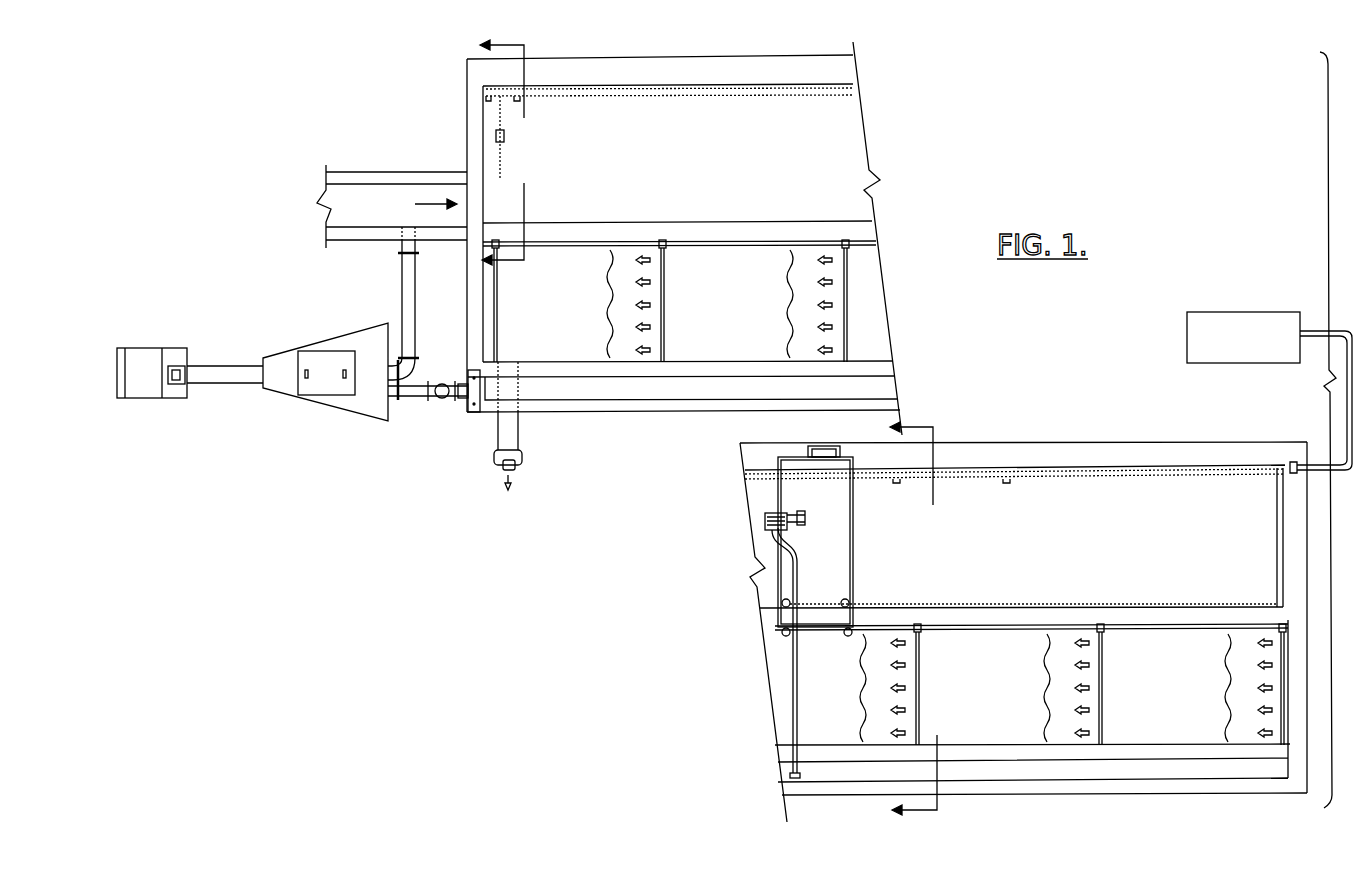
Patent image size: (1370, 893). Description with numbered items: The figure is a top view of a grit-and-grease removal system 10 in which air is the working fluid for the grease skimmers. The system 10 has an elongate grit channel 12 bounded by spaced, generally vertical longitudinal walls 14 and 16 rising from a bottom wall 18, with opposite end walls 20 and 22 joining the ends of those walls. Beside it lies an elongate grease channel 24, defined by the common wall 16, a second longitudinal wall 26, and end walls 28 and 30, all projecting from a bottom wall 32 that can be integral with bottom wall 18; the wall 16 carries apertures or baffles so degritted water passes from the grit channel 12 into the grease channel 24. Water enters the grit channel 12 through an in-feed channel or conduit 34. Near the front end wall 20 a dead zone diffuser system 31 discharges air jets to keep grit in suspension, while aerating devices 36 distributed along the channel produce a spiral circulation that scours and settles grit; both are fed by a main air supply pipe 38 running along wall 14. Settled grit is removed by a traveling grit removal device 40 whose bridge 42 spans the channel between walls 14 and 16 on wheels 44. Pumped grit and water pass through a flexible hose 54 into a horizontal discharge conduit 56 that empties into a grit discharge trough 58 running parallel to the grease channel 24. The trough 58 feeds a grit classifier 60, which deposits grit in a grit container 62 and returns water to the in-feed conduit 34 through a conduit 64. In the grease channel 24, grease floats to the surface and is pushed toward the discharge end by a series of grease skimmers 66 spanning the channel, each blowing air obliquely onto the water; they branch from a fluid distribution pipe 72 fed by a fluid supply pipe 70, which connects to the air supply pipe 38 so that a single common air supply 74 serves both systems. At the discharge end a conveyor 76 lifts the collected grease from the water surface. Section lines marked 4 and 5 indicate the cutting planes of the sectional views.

The section line 4- 4 is at (924, 621).
The section line 5- 5 is at (512, 157).
The grit-and-grease removal system 10 is at (417, 77).
The grit channel 12 is at (634, 118).
The longitudinal wall 14 is at (722, 64).
The longitudinal wall 16 is at (575, 230).
The bottom wall 18 is at (723, 170).
The end wall 20 is at (475, 119).
The end wall 22 is at (1297, 508).
The grease channel 24 is at (732, 344).
The second longitudinal wall 26 is at (878, 367).
The end wall 28 is at (475, 307).
The end wall 30 is at (1297, 673).
The dead zone diffuser system 31 is at (505, 123).
The bottom wall 32 is at (723, 288).
The in-feed channel or conduit 34 is at (410, 195).
The aerating devices 36 is at (1060, 468).
The main air supply pipe 38 is at (645, 88).
The traveling grit removal device 40 is at (857, 519).
The bridge 42 is at (823, 544).
The wheels 44 is at (782, 632).
The flexible hose 54 is at (768, 533).
The discharge conduit 56 is at (795, 710).
The grit discharge trough 58 is at (547, 390).
The grit classifier 60 is at (350, 403).
The grit container 62 is at (148, 384).
The conduit 64 is at (408, 318).
The grease skimmers 66 is at (666, 343).
The fluid supply pipe 70 is at (1278, 535).
The fluid distribution pipe 72 is at (734, 243).
The air supply 74 is at (1250, 311).
The conveyor 76 is at (508, 432).